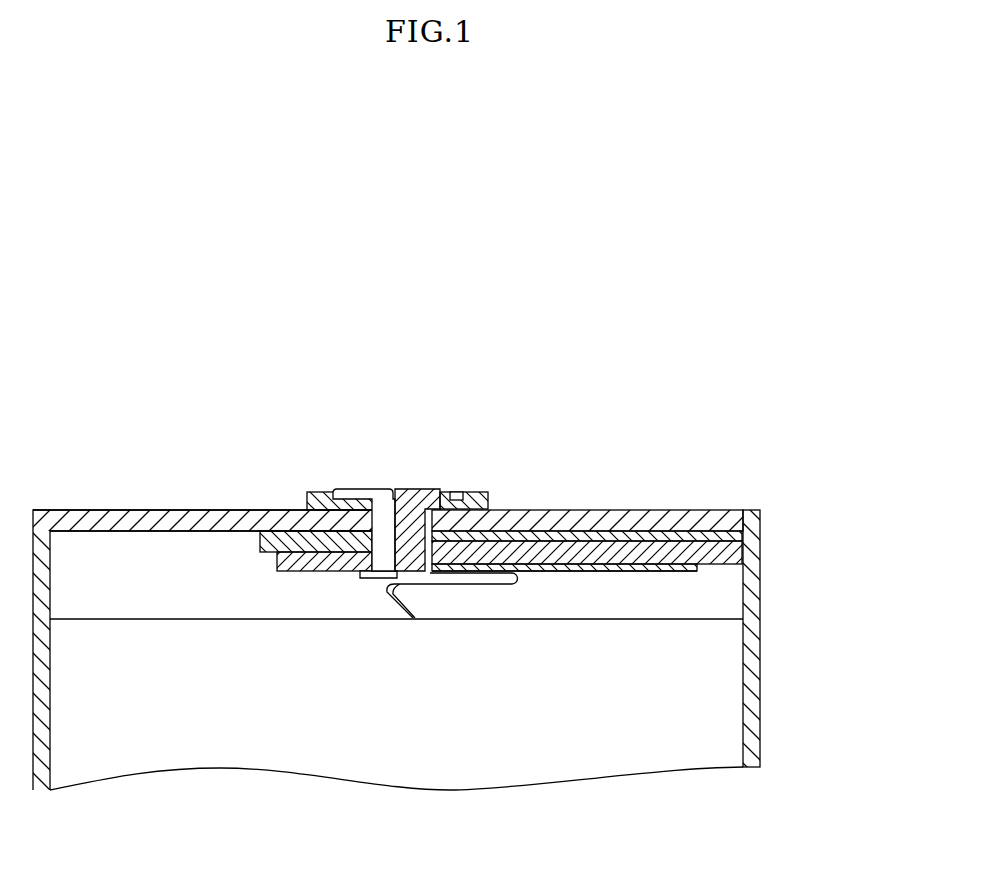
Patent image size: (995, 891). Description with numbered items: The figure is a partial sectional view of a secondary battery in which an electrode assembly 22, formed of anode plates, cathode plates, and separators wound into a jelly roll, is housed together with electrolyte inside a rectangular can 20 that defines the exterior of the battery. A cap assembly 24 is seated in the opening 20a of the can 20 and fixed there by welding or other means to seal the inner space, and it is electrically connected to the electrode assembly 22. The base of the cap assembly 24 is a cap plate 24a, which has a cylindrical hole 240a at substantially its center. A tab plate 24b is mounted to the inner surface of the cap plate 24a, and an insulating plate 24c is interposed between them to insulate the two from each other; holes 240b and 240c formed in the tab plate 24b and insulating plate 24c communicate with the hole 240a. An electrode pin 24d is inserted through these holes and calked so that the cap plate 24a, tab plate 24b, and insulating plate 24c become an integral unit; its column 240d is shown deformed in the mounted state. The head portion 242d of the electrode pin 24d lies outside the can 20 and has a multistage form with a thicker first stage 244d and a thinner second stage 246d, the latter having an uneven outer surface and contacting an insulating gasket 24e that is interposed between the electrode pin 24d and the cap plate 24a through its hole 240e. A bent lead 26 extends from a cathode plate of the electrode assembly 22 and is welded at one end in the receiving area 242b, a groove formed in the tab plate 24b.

The rectangular can 20 is at (761, 672).
The opening 20a is at (745, 510).
The electrode assembly 22 is at (470, 688).
The cap assembly 24 is at (533, 592).
The cap plate 24a is at (587, 482).
The tab plate 24b is at (645, 692).
The insulating plate 24c is at (745, 546).
The electrode pin 24d is at (473, 620).
The insulating gasket 24e is at (292, 474).
The lead 26 is at (511, 590).
The cylindrical hole 240a is at (502, 510).
The hole 240b is at (365, 574).
The hole 240c is at (356, 572).
The column 240d is at (377, 580).
The hole 240e is at (347, 491).
The receiving area 242b is at (598, 572).
The head portion 242d is at (373, 489).
The first stage 244d is at (445, 492).
The second stage 246d is at (462, 491).